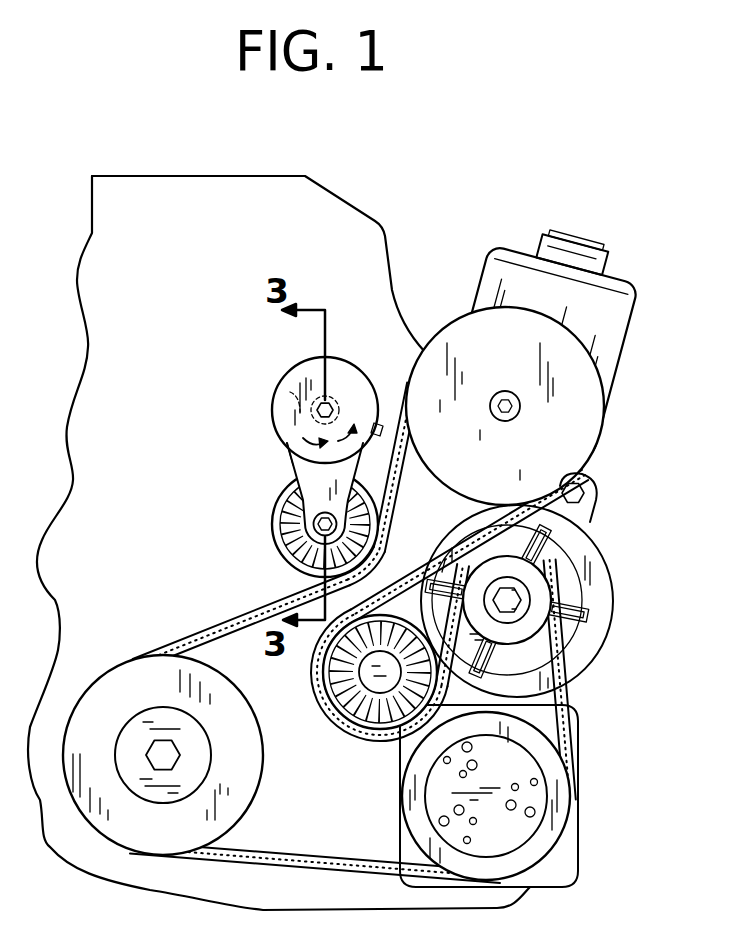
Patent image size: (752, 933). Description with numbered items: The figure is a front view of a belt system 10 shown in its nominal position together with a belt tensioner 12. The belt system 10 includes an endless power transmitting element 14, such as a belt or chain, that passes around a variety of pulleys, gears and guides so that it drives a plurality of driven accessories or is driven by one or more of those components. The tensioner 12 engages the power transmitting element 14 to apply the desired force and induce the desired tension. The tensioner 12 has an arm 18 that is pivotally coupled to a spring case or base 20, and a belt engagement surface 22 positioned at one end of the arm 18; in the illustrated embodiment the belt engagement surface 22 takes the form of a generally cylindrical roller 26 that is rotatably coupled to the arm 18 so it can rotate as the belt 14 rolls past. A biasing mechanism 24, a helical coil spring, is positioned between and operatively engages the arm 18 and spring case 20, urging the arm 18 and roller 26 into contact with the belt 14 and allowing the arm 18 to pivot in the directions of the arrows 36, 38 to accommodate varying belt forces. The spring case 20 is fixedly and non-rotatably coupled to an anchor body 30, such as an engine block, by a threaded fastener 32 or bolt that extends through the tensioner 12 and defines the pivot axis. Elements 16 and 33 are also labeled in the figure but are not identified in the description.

The belt system 10 is at (613, 431).
The belt tensioner 12 is at (303, 448).
The endless power transmitting element 14 is at (240, 616).
The tensioner arm 16 is at (300, 458).
The arm 18 is at (326, 524).
The spring case 20 is at (287, 372).
The belt engagement surface 22 is at (368, 503).
The biasing mechanism 24 is at (295, 394).
The roller 26 is at (274, 542).
The anchor body 30 is at (367, 250).
The threaded fastener 32 is at (333, 405).
The pivot bushing 33 is at (297, 426).
The arrow 36 is at (349, 422).
The arrow 38 is at (300, 452).